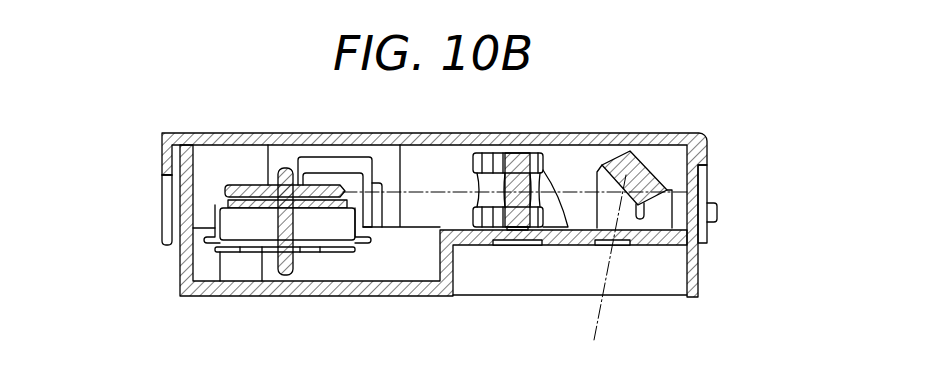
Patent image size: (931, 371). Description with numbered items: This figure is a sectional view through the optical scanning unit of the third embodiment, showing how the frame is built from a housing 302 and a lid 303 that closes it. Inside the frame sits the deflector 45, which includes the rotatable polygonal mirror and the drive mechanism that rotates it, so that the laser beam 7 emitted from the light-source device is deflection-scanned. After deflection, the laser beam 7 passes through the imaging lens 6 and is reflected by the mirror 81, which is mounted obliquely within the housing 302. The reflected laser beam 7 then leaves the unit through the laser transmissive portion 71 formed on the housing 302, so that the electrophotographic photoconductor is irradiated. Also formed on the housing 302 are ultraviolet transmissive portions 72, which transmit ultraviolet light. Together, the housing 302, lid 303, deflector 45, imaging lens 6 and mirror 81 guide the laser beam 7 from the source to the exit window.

The housing 302 is at (180, 285).
The lid 303 is at (163, 135).
The deflector 45 is at (240, 228).
The imaging lens 6 is at (516, 168).
The mirror 81 is at (645, 173).
The laser transmissive portion 71 is at (618, 245).
The ultraviolet transmissive portions 72 is at (517, 246).
The laser beam 7 is at (597, 323).